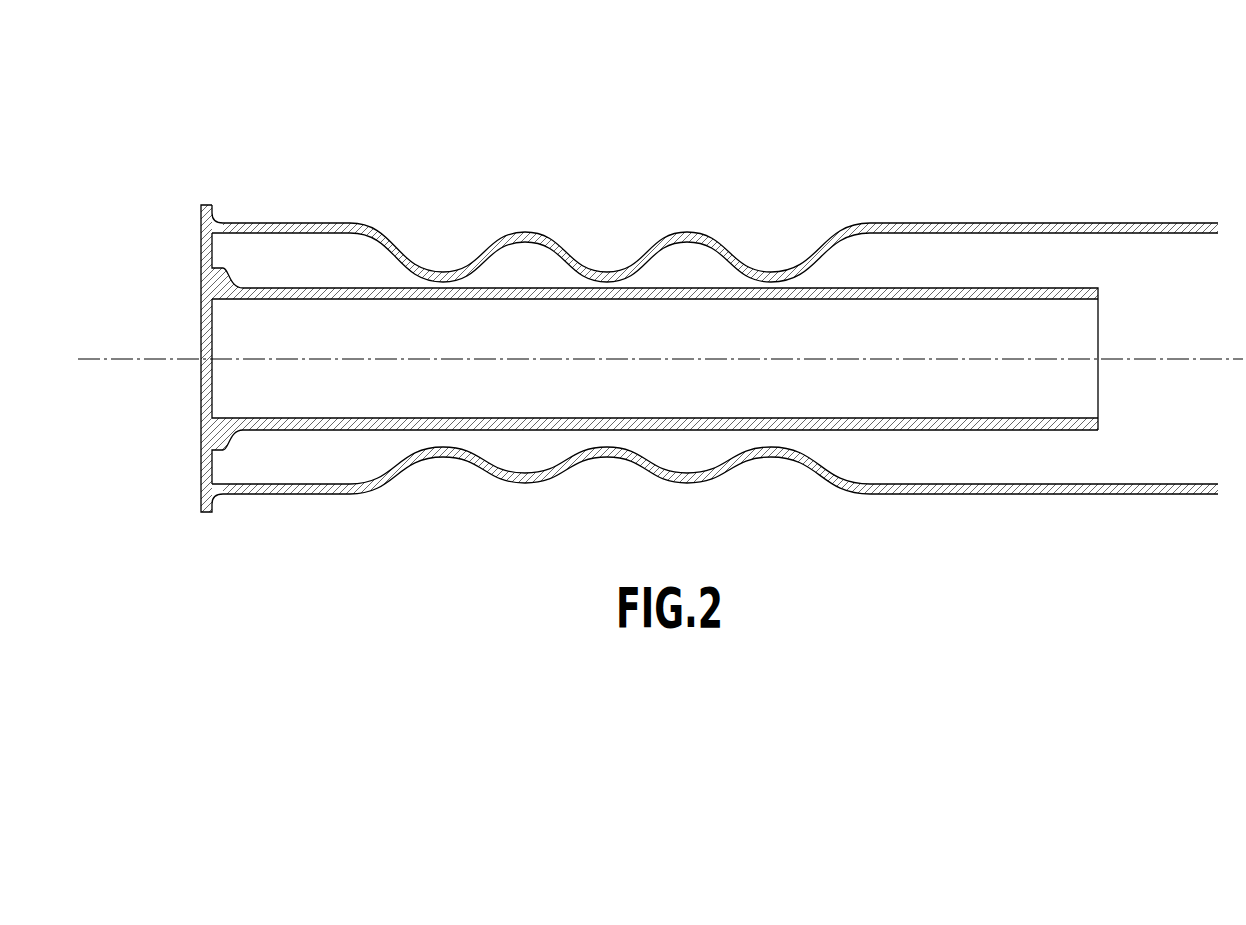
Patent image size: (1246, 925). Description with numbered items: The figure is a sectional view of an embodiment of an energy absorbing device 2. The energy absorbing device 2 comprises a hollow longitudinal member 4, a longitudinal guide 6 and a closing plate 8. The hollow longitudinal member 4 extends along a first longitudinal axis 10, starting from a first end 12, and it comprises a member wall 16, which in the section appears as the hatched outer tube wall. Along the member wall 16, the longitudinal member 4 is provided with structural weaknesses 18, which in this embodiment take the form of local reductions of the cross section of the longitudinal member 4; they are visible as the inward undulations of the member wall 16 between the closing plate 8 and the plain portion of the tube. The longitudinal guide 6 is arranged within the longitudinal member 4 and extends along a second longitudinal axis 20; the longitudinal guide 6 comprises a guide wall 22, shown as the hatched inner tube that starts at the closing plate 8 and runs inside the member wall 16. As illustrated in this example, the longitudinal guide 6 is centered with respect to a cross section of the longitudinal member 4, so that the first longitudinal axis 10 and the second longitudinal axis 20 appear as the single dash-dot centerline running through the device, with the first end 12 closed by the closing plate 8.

The energy absorbing device 2 is at (858, 121).
The hollow longitudinal member 4 is at (687, 230).
The longitudinal guide 6 is at (906, 437).
The closing plate 8 is at (205, 203).
The first longitudinal axis 10 is at (95, 356).
The first end 12 is at (180, 156).
The member wall 16 is at (287, 495).
The structural weaknesses 18 is at (443, 258).
The second longitudinal axis 20 is at (105, 363).
The guide wall 22 is at (945, 297).